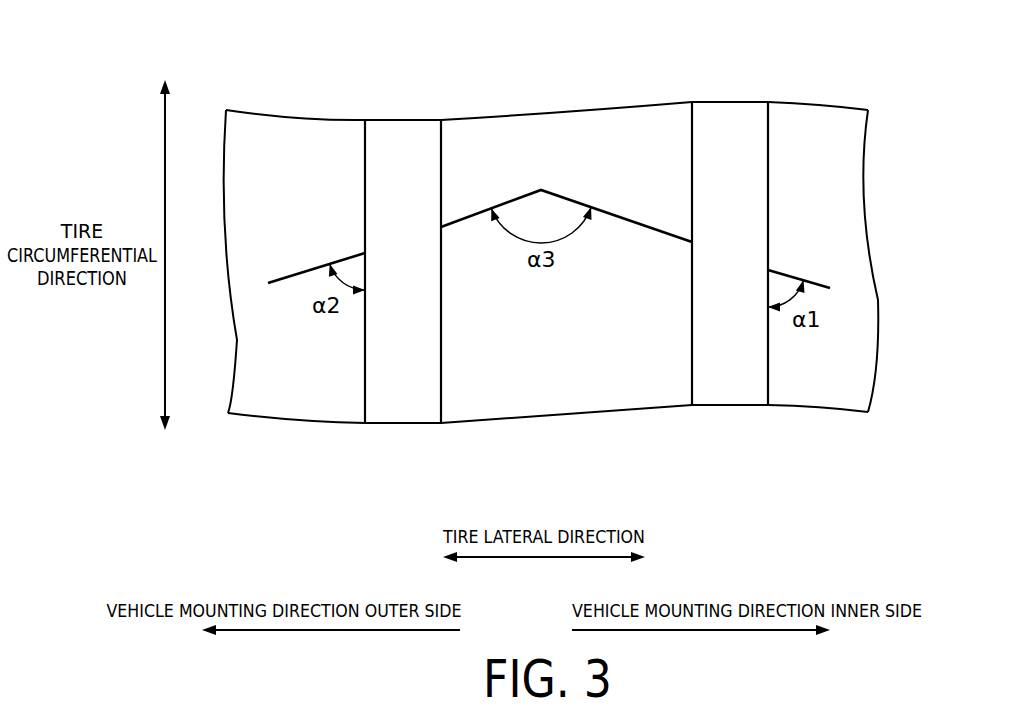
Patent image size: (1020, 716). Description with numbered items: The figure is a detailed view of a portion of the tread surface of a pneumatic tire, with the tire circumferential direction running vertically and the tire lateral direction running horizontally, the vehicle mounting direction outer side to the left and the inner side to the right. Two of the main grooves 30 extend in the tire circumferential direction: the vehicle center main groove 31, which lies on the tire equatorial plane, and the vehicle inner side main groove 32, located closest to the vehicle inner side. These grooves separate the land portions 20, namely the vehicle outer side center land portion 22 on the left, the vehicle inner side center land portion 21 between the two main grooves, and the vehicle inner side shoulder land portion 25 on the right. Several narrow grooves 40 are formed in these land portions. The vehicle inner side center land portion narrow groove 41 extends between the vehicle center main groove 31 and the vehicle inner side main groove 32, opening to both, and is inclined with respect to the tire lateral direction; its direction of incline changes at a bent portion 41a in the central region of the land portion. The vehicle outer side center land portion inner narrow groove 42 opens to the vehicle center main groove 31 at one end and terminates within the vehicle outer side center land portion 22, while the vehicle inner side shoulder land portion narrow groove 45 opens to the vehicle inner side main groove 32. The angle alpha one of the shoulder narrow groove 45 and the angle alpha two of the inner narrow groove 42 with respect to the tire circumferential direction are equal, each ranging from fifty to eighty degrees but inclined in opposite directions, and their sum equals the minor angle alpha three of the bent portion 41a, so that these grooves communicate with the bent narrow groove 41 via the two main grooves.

The land portions 20 is at (551, 295).
The vehicle inner side center land portion 21 is at (570, 378).
The vehicle outer side center land portion 22 is at (308, 380).
The vehicle inner side shoulder land portion 25 is at (807, 377).
The main grooves 30 is at (566, 238).
The vehicle center main groove 31 is at (405, 140).
The vehicle inner side main groove 32 is at (733, 140).
The narrow grooves 40 is at (565, 170).
The vehicle inner side center land portion narrow groove 41 is at (610, 210).
The bent portion 41a is at (541, 190).
The vehicle outer side center land portion inner narrow groove 42 is at (306, 270).
The vehicle inner side shoulder land portion narrow groove 45 is at (787, 270).